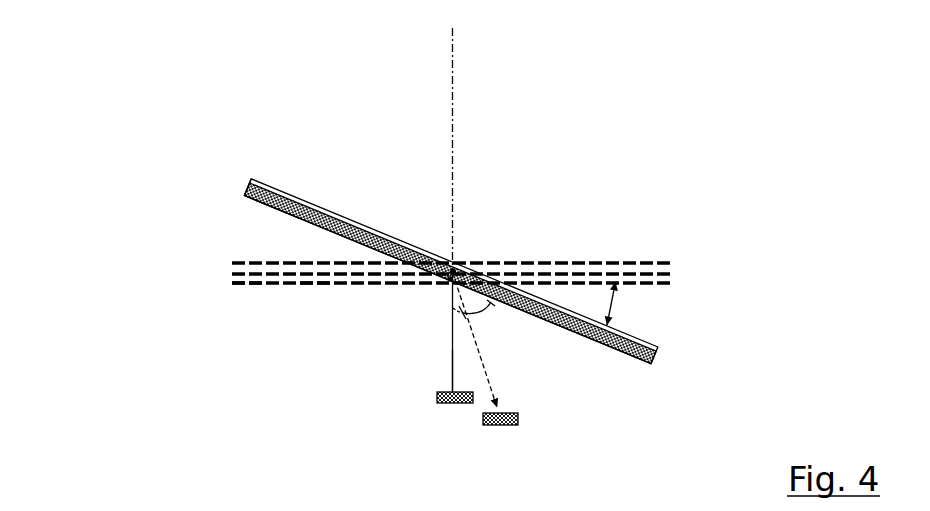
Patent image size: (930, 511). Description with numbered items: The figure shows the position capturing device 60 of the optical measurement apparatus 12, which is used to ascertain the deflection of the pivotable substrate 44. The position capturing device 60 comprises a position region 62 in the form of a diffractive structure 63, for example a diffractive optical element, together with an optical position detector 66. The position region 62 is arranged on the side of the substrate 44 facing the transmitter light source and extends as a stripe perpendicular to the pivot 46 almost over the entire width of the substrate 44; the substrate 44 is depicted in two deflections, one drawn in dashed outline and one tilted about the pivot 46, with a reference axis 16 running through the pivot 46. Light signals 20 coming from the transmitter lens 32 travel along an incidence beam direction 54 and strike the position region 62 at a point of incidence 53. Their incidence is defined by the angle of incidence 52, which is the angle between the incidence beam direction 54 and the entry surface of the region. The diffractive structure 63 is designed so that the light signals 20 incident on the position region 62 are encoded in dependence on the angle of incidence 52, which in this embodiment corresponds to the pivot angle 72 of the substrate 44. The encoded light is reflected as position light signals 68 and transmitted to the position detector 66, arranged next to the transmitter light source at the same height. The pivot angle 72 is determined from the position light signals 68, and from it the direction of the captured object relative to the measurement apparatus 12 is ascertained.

The measurement apparatus 12 is at (112, 200).
The optical axis 16 is at (424, 36).
The light signals 20 is at (453, 347).
The transmitter lens 32 is at (450, 405).
The substrate 44 is at (232, 268).
The pivot 46 is at (452, 257).
The angle of incidence 52 is at (530, 273).
The point of incidence 53 is at (447, 281).
The incidence beam direction 54 is at (453, 375).
The position capturing device 60 is at (427, 266).
The position region 62 is at (247, 198).
The diffractive structure 63 is at (296, 221).
The optical position detector 66 is at (518, 420).
The position light signals 68 is at (488, 368).
The pivot angle 72 is at (614, 294).